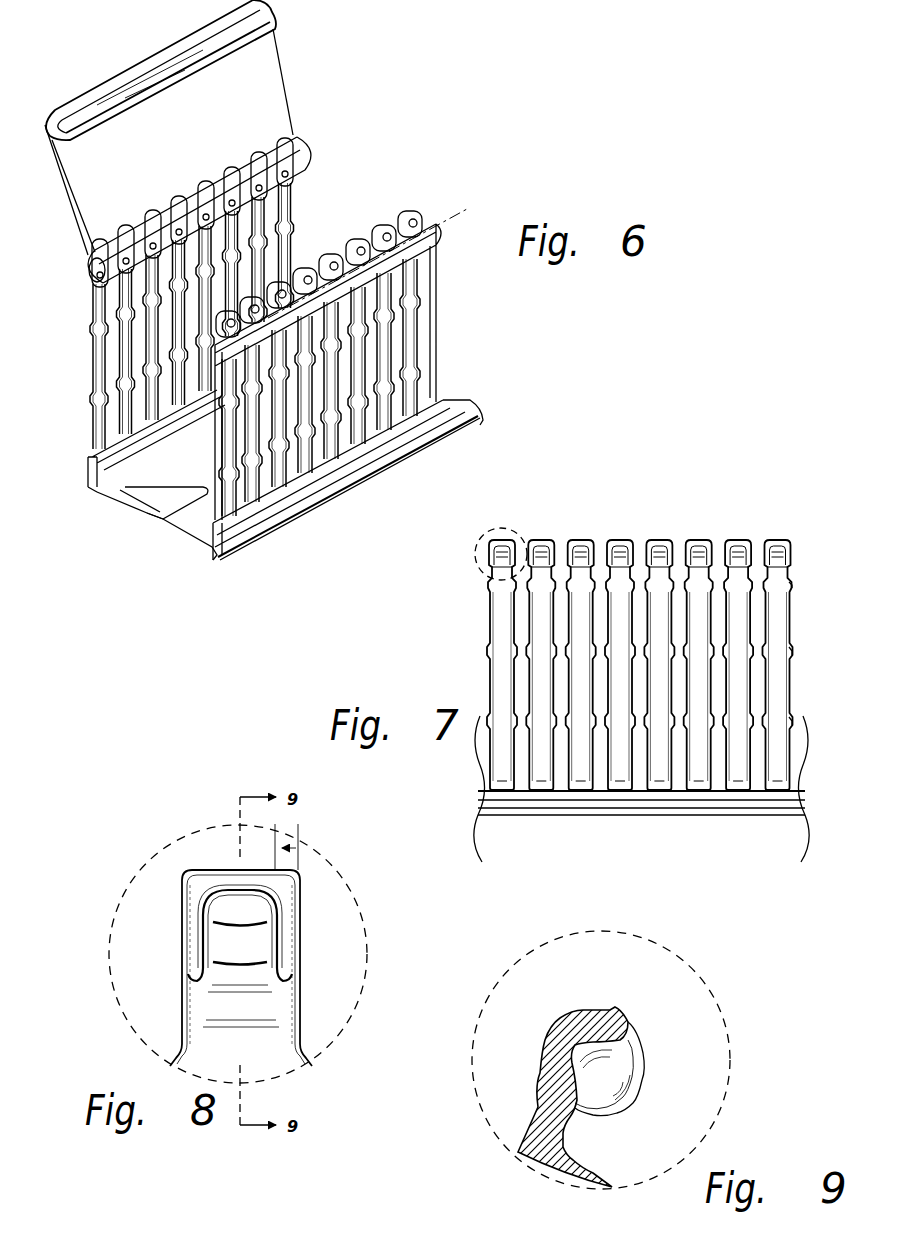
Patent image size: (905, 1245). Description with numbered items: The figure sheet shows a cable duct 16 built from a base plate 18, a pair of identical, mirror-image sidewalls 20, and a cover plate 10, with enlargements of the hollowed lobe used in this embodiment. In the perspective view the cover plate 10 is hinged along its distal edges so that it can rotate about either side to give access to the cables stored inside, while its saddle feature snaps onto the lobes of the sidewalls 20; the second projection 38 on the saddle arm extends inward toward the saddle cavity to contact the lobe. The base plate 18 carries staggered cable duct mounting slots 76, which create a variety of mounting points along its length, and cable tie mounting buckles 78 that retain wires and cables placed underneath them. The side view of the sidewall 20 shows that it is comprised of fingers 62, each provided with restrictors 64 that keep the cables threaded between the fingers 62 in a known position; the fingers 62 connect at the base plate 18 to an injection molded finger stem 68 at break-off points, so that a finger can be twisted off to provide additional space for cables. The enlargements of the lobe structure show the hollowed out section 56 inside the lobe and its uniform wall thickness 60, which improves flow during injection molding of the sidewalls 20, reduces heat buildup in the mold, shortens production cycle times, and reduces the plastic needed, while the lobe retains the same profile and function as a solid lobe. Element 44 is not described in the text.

In FIG. 6, the cover plate 10 is at (263, 73).
In FIG. 6, the cable duct 16 is at (350, 100).
In FIG. 6, the base plate 18 is at (193, 545).
In FIG. 6, the sidewalls 20 is at (107, 377).
In FIG. 7, the sidewalls 20 is at (476, 636).
In FIG. 8, the sidewalls 20 is at (303, 1040).
In FIG. 9, the sidewalls 20 is at (532, 1138).
In FIG. 6, the comb retainer bar 44 is at (336, 220).
In FIG. 8, the hollowed out section 56 is at (235, 958).
In FIG. 8, the uniform wall thickness 60 is at (298, 862).
In FIG. 7, the fingers 62 is at (778, 672).
In FIG. 7, the restrictors 64 is at (795, 583).
In FIG. 7, the finger stem 68 is at (628, 817).
In FIG. 6, the cable duct mounting slots 76 is at (163, 515).
In FIG. 6, the cable tie mounting buckles 78 is at (116, 494).
In FIG. 9, the second projection 38 is at (637, 1045).